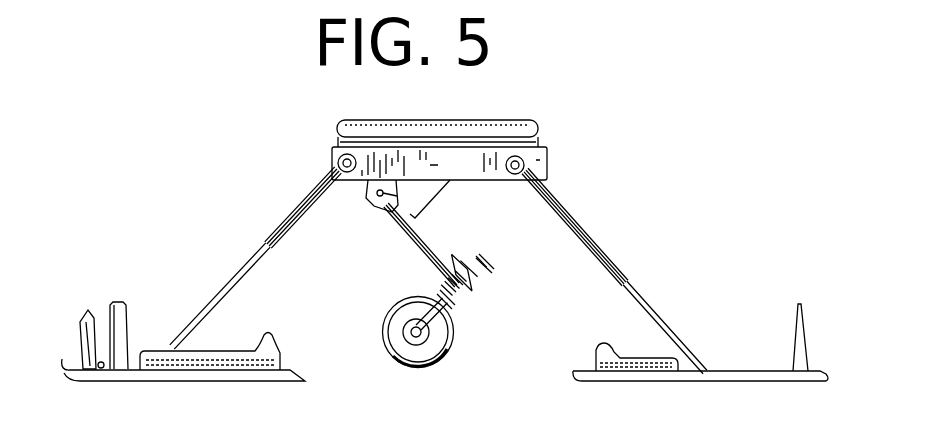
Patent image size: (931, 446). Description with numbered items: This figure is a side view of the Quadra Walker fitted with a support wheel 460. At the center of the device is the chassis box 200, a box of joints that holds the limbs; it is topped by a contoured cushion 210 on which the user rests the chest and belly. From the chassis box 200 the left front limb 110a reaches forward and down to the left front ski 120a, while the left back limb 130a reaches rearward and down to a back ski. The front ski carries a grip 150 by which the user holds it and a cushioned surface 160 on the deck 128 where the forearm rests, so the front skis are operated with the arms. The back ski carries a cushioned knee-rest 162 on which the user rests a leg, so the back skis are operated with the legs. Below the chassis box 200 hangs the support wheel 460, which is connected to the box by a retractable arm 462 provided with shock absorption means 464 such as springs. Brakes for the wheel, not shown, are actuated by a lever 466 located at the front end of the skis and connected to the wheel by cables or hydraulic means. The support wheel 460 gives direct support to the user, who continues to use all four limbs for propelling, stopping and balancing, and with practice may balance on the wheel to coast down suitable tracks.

The contoured cushion 210 is at (374, 122).
The chassis box 200 is at (492, 147).
The left front limb 110a is at (255, 258).
The left back limb 130a is at (614, 270).
The left front ski 120a is at (183, 394).
The cushioned surface 160 is at (252, 378).
The grip 150 is at (143, 322).
The lever 466 is at (119, 300).
The deck 128 is at (700, 330).
The cushioned knee-rest 162 is at (582, 382).
The retractable arm 462 is at (386, 233).
The shock absorption means 464 is at (487, 292).
The support wheel 460 is at (376, 322).